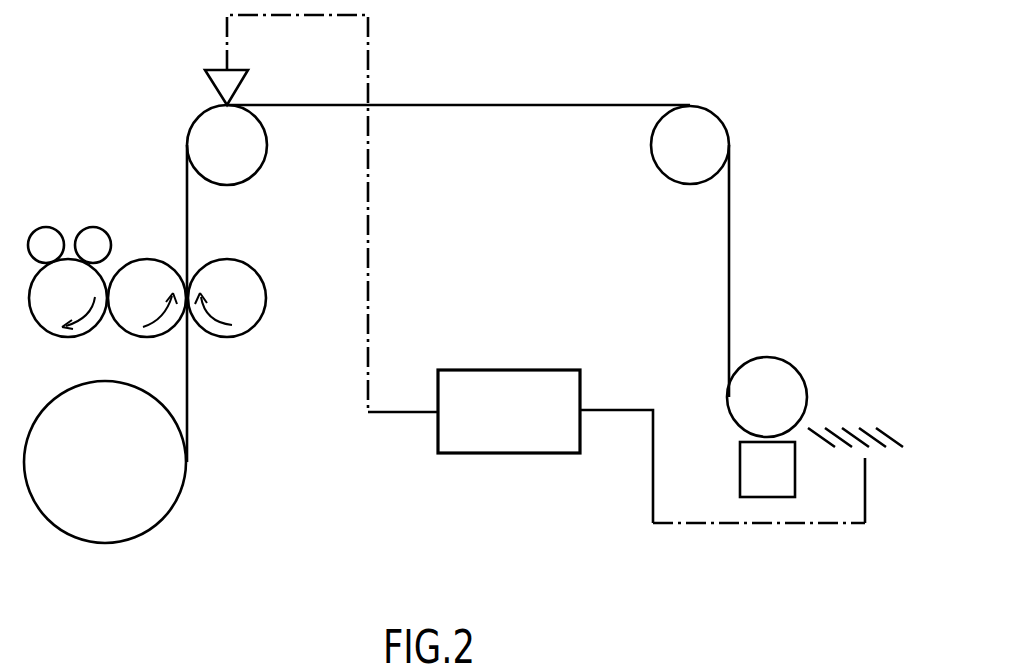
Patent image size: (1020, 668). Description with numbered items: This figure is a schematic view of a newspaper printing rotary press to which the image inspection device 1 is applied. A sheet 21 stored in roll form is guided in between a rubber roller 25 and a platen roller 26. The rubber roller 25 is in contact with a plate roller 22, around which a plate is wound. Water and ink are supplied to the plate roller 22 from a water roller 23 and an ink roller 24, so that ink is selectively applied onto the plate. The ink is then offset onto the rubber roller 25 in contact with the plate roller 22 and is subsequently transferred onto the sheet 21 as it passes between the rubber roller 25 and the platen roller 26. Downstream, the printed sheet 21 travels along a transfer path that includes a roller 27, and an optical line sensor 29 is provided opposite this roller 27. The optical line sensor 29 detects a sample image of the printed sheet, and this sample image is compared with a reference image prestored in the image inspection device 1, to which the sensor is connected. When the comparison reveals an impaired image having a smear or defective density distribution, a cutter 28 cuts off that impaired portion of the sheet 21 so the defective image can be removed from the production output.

The image inspection device 1 is at (583, 370).
The sheet 21 is at (113, 543).
The plate roller 22 is at (62, 338).
The water roller 23 is at (40, 226).
The ink roller 24 is at (93, 227).
The rubber roller 25 is at (152, 338).
The platen roller 26 is at (252, 333).
The roller 27 is at (257, 172).
The cutter 28 is at (740, 453).
The optical line sensor 29 is at (205, 70).